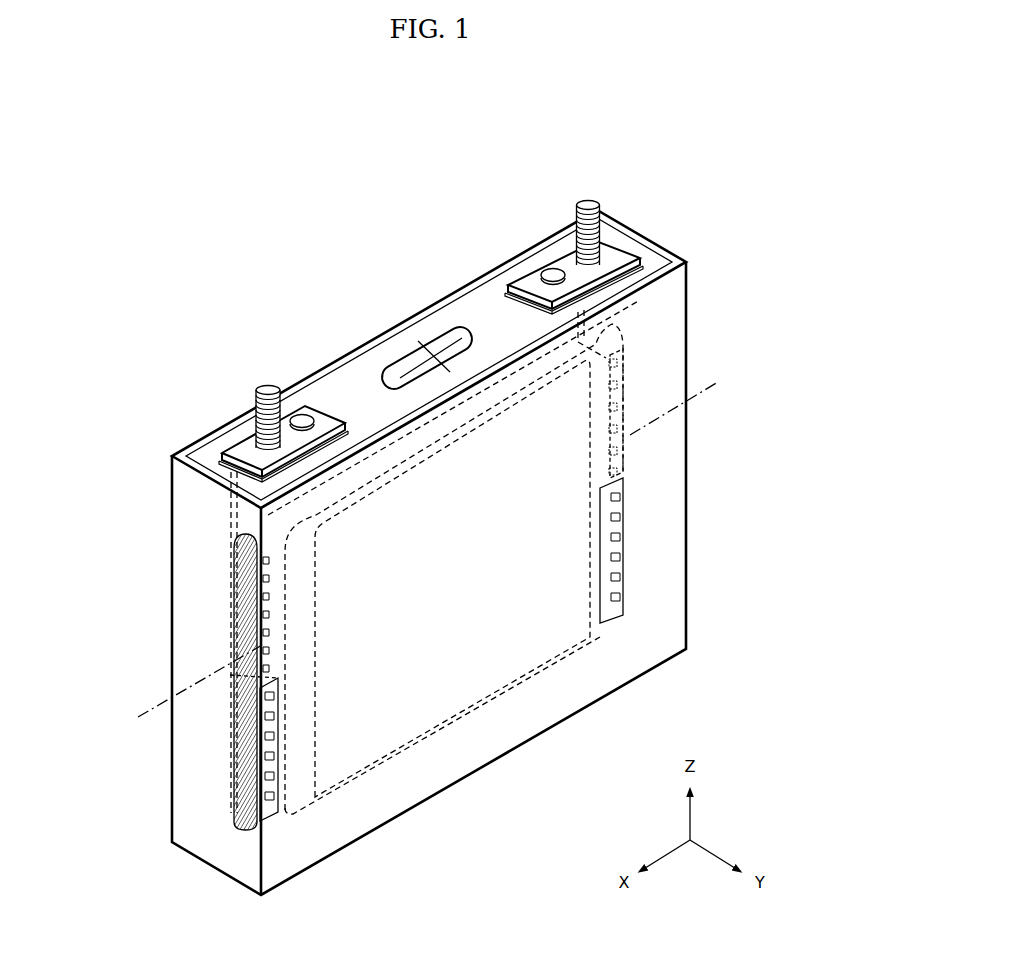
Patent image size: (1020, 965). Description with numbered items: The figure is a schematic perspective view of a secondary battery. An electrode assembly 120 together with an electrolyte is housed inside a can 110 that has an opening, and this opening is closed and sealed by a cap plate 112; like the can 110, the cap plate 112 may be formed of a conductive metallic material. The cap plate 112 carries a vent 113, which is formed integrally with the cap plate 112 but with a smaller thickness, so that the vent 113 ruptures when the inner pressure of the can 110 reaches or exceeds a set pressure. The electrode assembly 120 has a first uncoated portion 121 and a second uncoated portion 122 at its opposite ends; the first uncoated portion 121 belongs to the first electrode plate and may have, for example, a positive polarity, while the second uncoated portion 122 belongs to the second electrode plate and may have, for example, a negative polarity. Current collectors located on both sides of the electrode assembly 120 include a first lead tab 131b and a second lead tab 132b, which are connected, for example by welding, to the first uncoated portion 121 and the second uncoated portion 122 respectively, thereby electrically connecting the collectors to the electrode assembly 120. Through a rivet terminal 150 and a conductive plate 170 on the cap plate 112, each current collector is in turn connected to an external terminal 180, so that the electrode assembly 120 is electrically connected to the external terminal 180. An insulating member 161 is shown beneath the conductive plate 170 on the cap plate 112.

The can 110 is at (688, 578).
The cap plate 112 is at (655, 250).
The vent 113 is at (412, 352).
The electrode assembly 120 is at (496, 686).
The first uncoated portion 121 is at (263, 552).
The second uncoated portion 122 is at (613, 348).
The first lead tab 131b is at (240, 517).
The second lead tab 132b is at (623, 503).
The rivet terminal 150 is at (301, 414).
The insulating plate 161 is at (220, 456).
The conductive plate 170 is at (243, 447).
The external terminal 180 is at (262, 389).